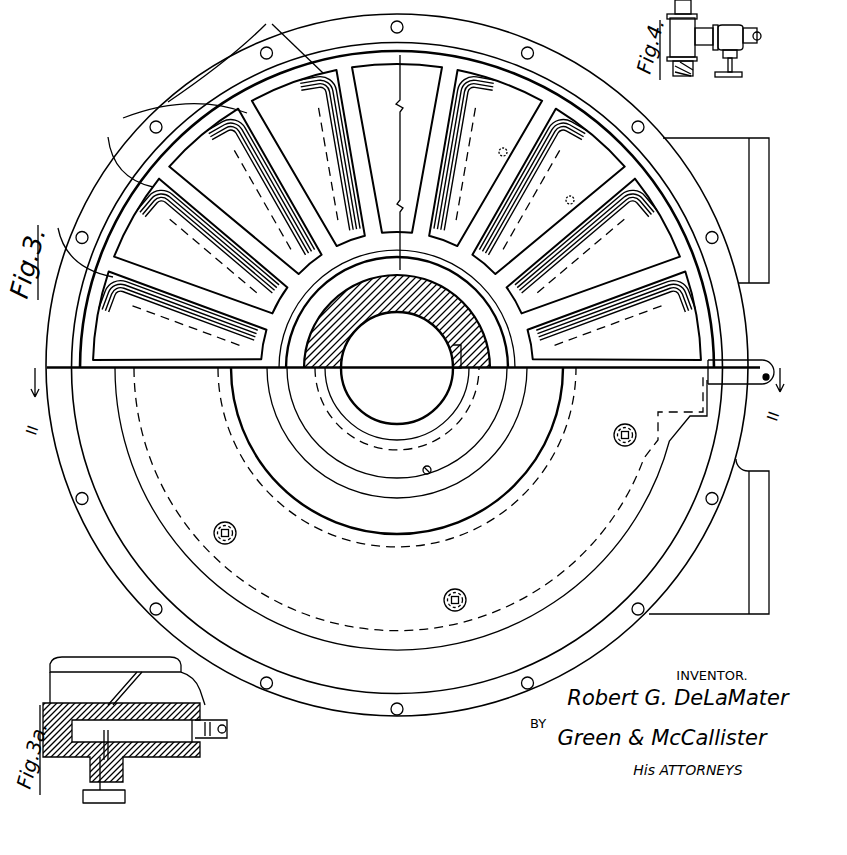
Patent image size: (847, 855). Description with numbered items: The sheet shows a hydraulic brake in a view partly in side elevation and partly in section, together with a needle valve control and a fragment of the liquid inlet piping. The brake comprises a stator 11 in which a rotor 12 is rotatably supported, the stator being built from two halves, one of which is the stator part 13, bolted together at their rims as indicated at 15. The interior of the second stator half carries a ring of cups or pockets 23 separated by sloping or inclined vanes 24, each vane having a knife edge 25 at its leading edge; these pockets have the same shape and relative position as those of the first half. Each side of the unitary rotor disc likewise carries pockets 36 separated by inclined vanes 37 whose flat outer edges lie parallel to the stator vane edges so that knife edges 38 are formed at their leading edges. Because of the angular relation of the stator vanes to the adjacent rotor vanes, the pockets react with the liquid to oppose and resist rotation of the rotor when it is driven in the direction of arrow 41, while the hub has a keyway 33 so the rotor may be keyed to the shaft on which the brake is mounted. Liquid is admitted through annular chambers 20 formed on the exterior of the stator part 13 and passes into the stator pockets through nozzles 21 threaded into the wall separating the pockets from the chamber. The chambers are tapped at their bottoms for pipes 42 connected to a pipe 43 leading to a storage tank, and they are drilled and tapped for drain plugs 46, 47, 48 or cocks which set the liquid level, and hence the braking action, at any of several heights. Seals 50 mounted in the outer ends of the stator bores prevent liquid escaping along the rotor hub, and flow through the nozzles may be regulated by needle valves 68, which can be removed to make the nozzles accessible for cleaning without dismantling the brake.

In FIG. 3, the stator 11 is at (411, 509).
In FIG. 3, the rotor 12 is at (556, 100).
In FIG. 3A, the rotor 12 is at (93, 665).
In FIG. 3A, the stator part 13 is at (208, 716).
In FIG. 3, the bolts 15 is at (268, 690).
In FIG. 3A, the annular chambers 20 is at (172, 738).
In FIG. 3A, the nozzles 21 is at (140, 680).
In FIG. 3, the pockets 23 is at (243, 207).
In FIG. 3, the vanes 24 is at (182, 138).
In FIG. 3, the knife edge 25 is at (165, 272).
In FIG. 3, the keyway 33 is at (396, 349).
In FIG. 3, the pockets 36 is at (402, 102).
In FIG. 3, the vanes 37 is at (552, 200).
In FIG. 3, the knife edges 38 is at (658, 262).
In FIG. 3, the arrow 41 is at (596, 147).
In FIG. 3, the pipes 42 is at (766, 360).
In FIG. 3A, the pipes 42 is at (215, 740).
In FIG. 4, the pipes 42 is at (690, 70).
In FIG. 4, the pipe 43 is at (752, 28).
In FIG. 3, the drain plug 46 is at (617, 426).
In FIG. 3, the drain plug 47 is at (459, 590).
In FIG. 3, the drain plug 48 is at (225, 522).
In FIG. 3, the seals 50 is at (386, 484).
In FIG. 3A, the needle valves 68 is at (85, 775).